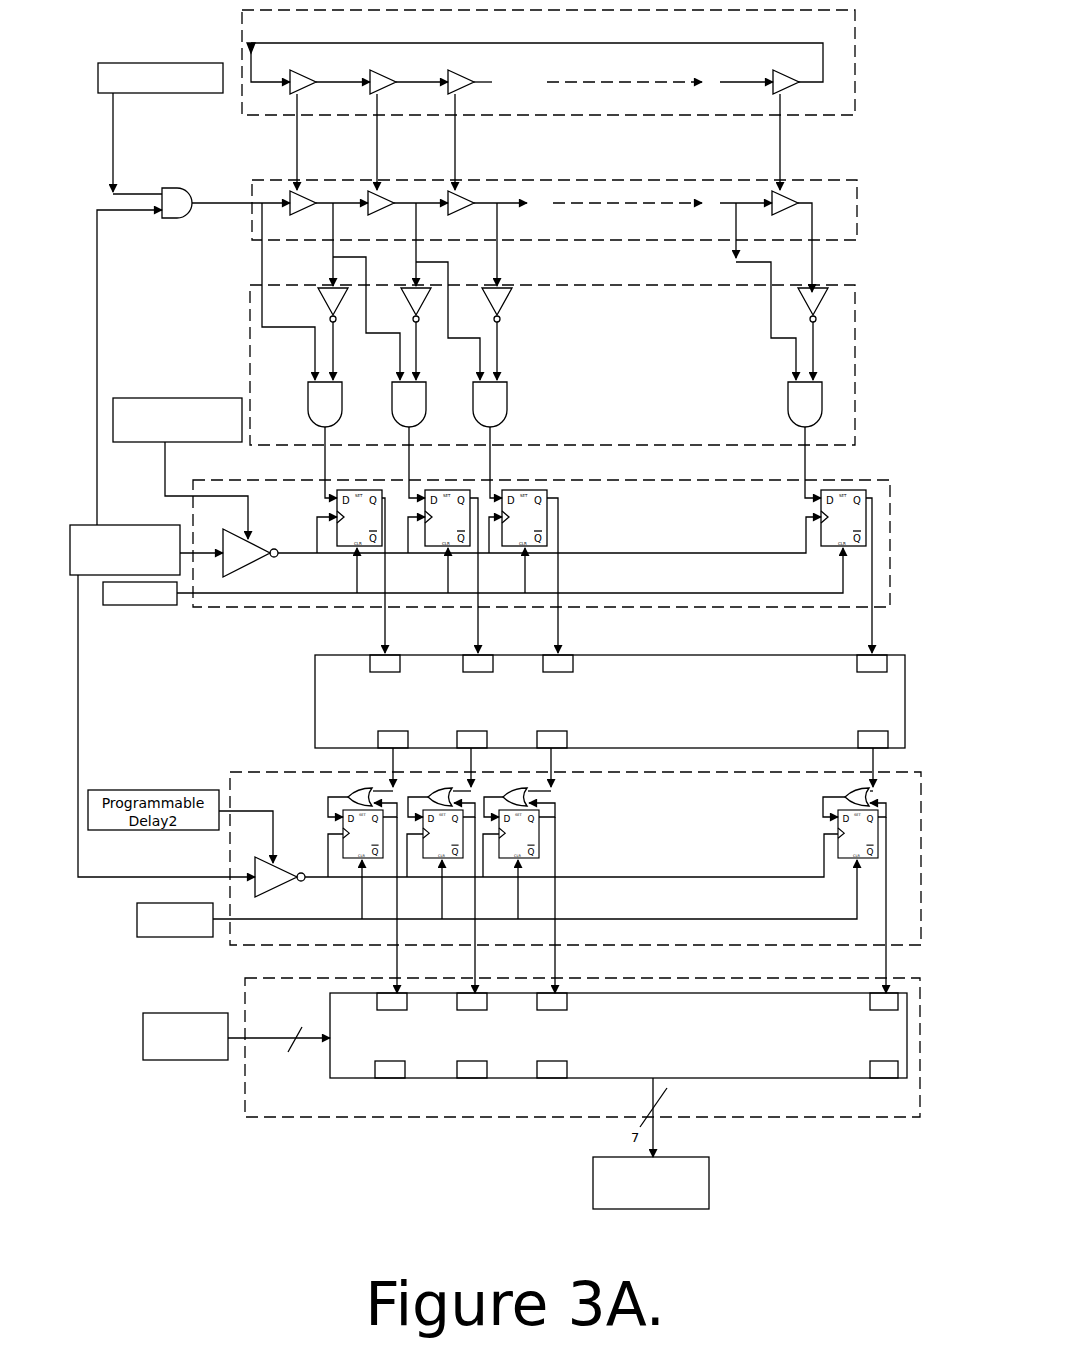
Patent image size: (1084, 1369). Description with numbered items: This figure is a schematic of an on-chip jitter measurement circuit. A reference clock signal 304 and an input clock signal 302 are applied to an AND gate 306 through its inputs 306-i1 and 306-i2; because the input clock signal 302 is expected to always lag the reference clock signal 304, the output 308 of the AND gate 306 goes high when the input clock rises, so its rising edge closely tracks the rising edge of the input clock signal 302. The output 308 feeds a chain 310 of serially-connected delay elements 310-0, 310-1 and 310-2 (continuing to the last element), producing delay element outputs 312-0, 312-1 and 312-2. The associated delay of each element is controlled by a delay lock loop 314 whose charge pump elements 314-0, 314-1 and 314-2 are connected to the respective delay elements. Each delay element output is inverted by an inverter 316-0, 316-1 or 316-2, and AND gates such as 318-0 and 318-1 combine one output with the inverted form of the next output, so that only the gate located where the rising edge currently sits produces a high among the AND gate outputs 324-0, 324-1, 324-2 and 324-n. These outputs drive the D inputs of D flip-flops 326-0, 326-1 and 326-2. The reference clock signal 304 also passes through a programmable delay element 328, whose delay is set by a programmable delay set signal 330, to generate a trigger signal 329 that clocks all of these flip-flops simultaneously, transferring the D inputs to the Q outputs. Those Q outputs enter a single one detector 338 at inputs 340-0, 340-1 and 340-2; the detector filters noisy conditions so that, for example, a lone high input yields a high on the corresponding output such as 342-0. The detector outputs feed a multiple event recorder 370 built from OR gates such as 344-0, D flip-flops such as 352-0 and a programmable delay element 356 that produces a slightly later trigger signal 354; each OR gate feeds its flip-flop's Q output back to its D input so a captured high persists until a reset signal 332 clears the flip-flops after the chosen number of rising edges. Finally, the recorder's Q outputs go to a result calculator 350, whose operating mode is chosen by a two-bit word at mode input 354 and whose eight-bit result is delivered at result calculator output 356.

The input clock signal 302 is at (166, 63).
The reference clock signal 304 is at (112, 525).
The AND gate 306 is at (168, 190).
The AND gate input 306-i1 is at (164, 214).
The AND gate input 306-i2 is at (164, 190).
The AND gate output 308 is at (210, 203).
The serially-connected delay elements 310 is at (655, 178).
The delay element 310-0 is at (300, 188).
The delay element 310-1 is at (380, 188).
The delay element 310-2 is at (460, 188).
The delay element output 312-0 is at (316, 204).
The delay element output 312-1 is at (394, 204).
The delay element output 312-2 is at (474, 204).
The delay lock loop 314 is at (856, 75).
The charge pump element 314-0 is at (297, 67).
The charge pump element 314-1 is at (378, 67).
The charge pump element 314-2 is at (456, 67).
The inverter 316-0 is at (318, 296).
The inverter 316-1 is at (401, 296).
The inverter 316-2 is at (512, 298).
The AND gate 318-0 is at (308, 412).
The AND gate 318-1 is at (392, 412).
The AND gate output 324-0 is at (327, 441).
The AND gate output 324-1 is at (411, 441).
The AND gate output 324-2 is at (492, 441).
The AND gate output 324-n is at (805, 440).
The D flip-flop 326-0 is at (345, 490).
The D flip-flop 326-1 is at (430, 490).
The D flip-flop 326-2 is at (508, 490).
The programmable delay element 328 is at (240, 570).
The trigger signal 329 is at (290, 556).
The programmable delay set signal 330 is at (165, 398).
The reset signal 332 is at (138, 605).
The single one detector 338 is at (700, 656).
The single one detector input 340-0 is at (393, 655).
The single one detector input 340-1 is at (485, 655).
The single one detector input 340-2 is at (565, 655).
The single one detector output 342-0 is at (395, 731).
The OR gate 344-0 is at (350, 790).
The result calculator 350 is at (330, 1008).
The D flip-flop 352-0 is at (341, 826).
The trigger signal / mode input 354 is at (300, 880).
The programmable delay element / result calculator output 356 is at (262, 860).
The multiple event recorder 370 is at (262, 772).